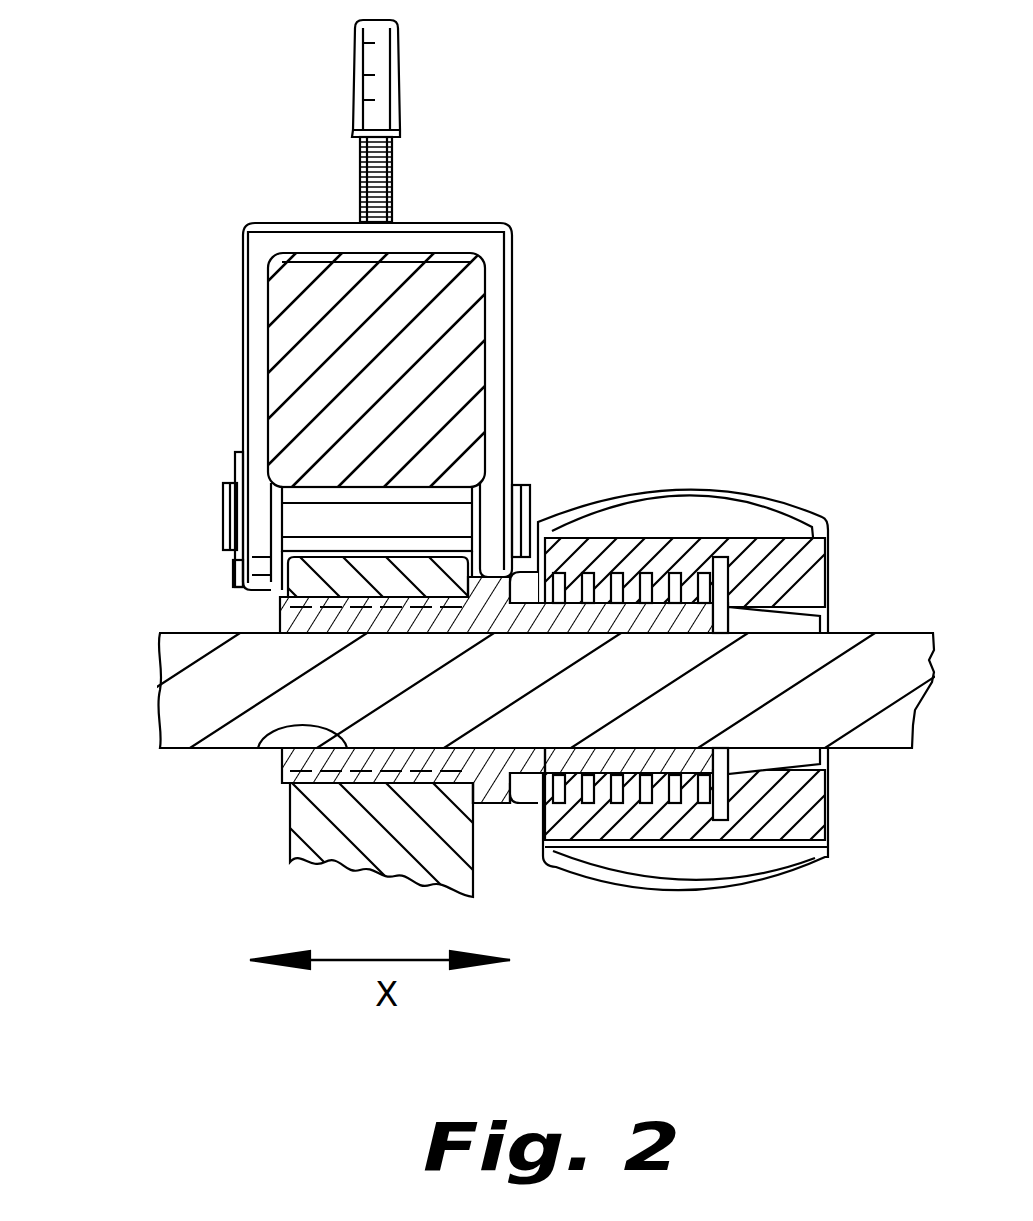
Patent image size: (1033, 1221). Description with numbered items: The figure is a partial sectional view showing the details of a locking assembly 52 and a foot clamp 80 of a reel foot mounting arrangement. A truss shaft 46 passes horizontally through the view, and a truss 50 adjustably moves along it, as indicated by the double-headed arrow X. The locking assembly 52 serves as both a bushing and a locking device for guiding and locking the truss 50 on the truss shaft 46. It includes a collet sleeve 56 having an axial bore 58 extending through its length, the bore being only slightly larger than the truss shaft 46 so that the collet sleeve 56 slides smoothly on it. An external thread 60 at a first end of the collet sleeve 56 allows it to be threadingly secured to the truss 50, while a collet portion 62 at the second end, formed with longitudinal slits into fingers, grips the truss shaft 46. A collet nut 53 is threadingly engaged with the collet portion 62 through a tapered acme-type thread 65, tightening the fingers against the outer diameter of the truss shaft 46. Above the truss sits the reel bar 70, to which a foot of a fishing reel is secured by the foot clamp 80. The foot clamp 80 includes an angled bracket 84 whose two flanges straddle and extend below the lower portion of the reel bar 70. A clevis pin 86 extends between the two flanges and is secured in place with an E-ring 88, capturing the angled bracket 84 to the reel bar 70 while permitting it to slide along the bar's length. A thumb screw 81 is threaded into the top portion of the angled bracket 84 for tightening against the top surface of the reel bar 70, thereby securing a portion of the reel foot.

The truss shaft 46 is at (160, 660).
The truss 50 is at (324, 851).
The locking assembly 52 is at (756, 446).
The collet nut 53 is at (775, 865).
The collet sleeve 56 is at (493, 805).
The axial bore 58 is at (280, 750).
The external thread 60 is at (290, 808).
The collet portion 62 is at (623, 757).
The tapered acme-type thread 65 is at (660, 597).
The reel bar 70 is at (447, 350).
The foot clamp 80 is at (359, 303).
The thumb screw 81 is at (364, 76).
The angled bracket 84 is at (250, 362).
The clevis pin 86 is at (227, 507).
The E-ring 88 is at (238, 572).